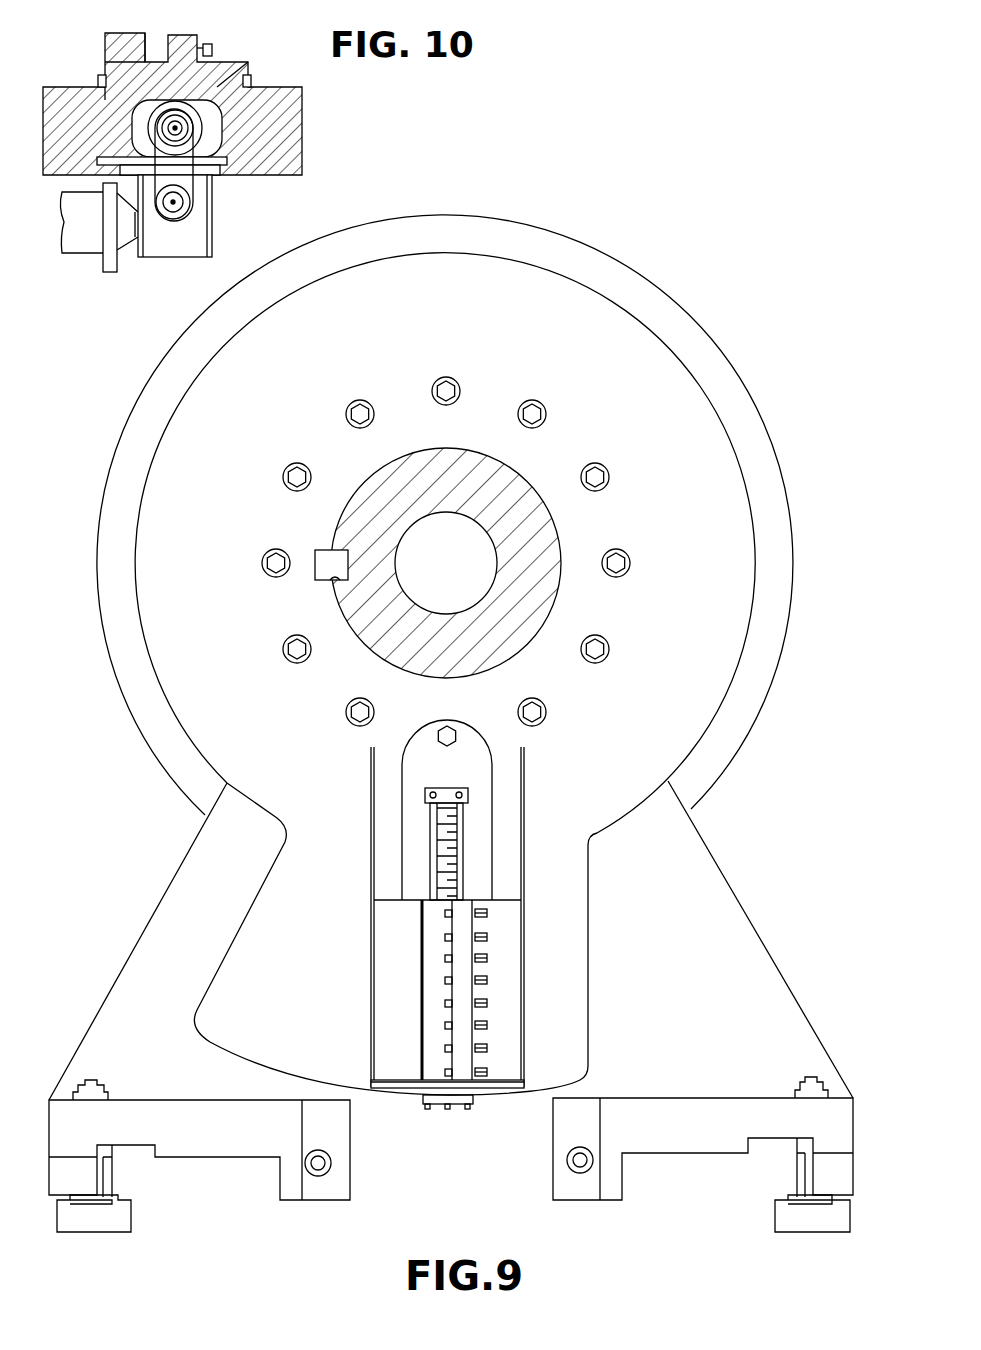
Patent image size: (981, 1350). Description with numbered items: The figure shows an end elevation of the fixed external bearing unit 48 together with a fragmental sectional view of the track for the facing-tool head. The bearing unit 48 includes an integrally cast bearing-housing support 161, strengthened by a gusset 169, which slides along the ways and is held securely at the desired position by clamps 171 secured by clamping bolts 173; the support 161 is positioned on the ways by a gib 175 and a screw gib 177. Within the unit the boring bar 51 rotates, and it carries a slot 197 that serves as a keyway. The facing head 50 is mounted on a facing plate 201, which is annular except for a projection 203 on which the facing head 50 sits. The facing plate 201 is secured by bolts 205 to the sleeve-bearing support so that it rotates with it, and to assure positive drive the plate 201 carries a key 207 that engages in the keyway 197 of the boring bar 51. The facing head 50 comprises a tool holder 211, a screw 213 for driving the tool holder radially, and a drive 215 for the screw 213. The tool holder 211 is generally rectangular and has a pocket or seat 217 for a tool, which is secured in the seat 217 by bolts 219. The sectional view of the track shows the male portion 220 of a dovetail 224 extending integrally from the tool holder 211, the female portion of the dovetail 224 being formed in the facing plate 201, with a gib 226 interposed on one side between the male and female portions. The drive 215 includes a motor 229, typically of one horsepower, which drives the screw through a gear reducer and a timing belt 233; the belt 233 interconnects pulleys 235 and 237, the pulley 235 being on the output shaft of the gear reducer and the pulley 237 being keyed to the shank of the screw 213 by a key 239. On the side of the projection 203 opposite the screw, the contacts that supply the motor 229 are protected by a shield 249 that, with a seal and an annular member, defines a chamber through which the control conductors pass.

In FIG. 9, the external bearing unit 48 is at (580, 221).
In FIG. 9, the facing head 50 is at (634, 945).
In FIG. 9, the boring bar 51 is at (486, 516).
In FIG. 9, the bearing-housing support 161 is at (232, 1163).
In FIG. 9, the gusset 169 is at (790, 990).
In FIG. 9, the clamps 171 is at (852, 1172).
In FIG. 9, the clamping bolts 173 is at (805, 1076).
In FIG. 9, the gib 175 is at (624, 1181).
In FIG. 9, the screw gib 177 is at (566, 1160).
In FIG. 9, the slot 197 is at (331, 580).
In FIG. 10, the facing plate 201 is at (302, 98).
In FIG. 9, the facing plate 201 is at (443, 260).
In FIG. 9, the projection 203 is at (220, 974).
In FIG. 9, the bolts 205 is at (591, 488).
In FIG. 9, the key 207 is at (320, 552).
In FIG. 10, the tool holder 211 is at (105, 46).
In FIG. 9, the tool holder 211 is at (374, 972).
In FIG. 9, the screw 213 is at (464, 806).
In FIG. 10, the drive 215 is at (190, 246).
In FIG. 10, the seat 217 is at (150, 53).
In FIG. 9, the seat 217 is at (422, 1006).
In FIG. 10, the bolts 219 is at (212, 47).
In FIG. 9, the bolts 219 is at (488, 1000).
In FIG. 10, the male portion of dovetail 220 is at (249, 78).
In FIG. 10, the dovetail 224 is at (130, 124).
In FIG. 10, the gib 226 is at (100, 80).
In FIG. 10, the motor 229 is at (62, 224).
In FIG. 10, the timing belt 233 is at (195, 209).
In FIG. 10, the pulley 235 is at (193, 188).
In FIG. 10, the pulley 237 is at (190, 130).
In FIG. 10, the key 239 is at (179, 116).
In FIG. 9, the shield 249 is at (703, 331).